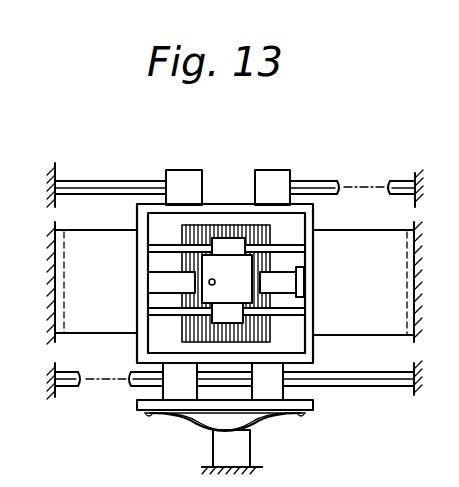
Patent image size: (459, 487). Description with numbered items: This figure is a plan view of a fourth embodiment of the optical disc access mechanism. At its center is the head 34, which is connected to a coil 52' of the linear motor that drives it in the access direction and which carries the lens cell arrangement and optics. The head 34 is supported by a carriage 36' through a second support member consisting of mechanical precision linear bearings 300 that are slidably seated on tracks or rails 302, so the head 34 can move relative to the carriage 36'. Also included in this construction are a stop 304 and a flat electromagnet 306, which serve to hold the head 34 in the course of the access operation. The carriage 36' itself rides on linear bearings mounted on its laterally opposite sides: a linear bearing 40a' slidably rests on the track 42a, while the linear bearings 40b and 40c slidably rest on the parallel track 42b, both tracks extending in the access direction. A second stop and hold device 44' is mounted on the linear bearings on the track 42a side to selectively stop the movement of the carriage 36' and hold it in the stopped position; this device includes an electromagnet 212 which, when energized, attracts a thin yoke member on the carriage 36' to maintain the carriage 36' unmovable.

The head 34 is at (250, 268).
The carriage 36′ is at (315, 362).
The linear bearing 40a′ is at (170, 387).
The linear bearing 40b is at (181, 169).
The linear bearing 40c is at (275, 169).
The track 42a is at (397, 386).
The track 42b is at (325, 184).
The second stop and hold device 44′ is at (204, 452).
The coil 52′ is at (313, 358).
The electromagnet 212 is at (191, 417).
The mechanical precision linear bearing 300 is at (228, 238).
The track 302 is at (290, 246).
The stop 304 is at (150, 280).
The flat electromagnet 306 is at (300, 282).